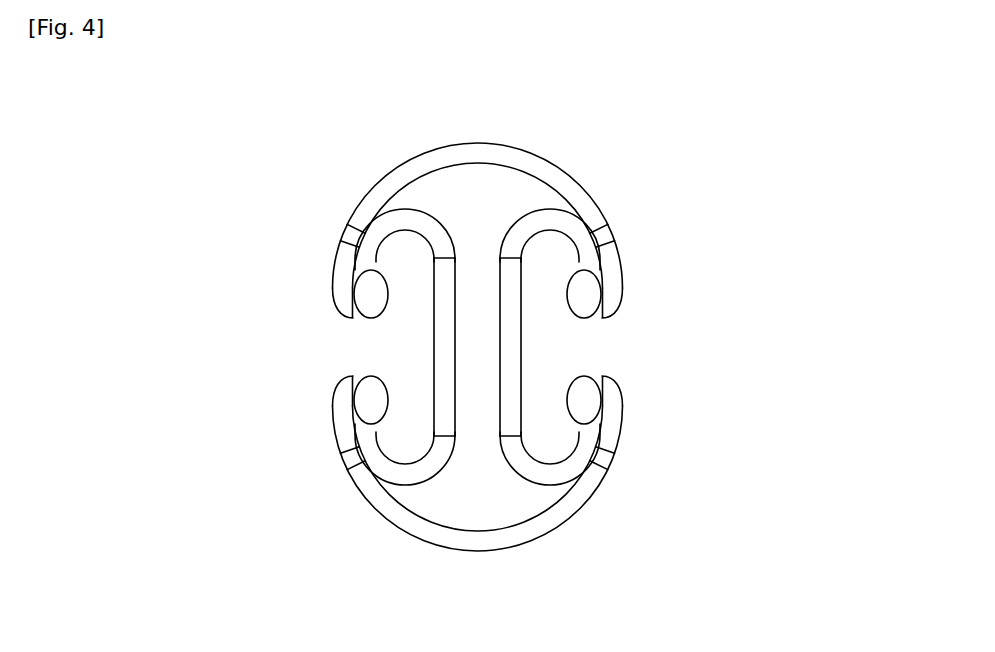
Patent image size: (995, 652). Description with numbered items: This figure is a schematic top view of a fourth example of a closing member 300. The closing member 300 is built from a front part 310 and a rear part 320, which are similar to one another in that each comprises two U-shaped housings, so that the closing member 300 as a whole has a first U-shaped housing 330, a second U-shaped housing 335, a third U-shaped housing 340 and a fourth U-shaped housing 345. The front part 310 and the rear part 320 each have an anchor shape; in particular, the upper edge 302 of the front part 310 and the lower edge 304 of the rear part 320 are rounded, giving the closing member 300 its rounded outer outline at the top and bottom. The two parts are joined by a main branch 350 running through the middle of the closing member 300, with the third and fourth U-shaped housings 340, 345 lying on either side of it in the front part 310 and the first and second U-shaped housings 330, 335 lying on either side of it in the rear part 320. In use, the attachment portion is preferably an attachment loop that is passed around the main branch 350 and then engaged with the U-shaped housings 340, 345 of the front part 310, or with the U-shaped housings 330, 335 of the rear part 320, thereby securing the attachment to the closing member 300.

The closing member 300 is at (762, 313).
The upper edge 302 is at (478, 143).
The lower edge 304 is at (477, 552).
The front part 310 is at (250, 144).
The rear part 320 is at (250, 374).
The first U-shaped housing 330 is at (406, 436).
The second U-shaped housing 335 is at (549, 436).
The third U-shaped housing 340 is at (406, 258).
The fourth U-shaped housing 345 is at (549, 258).
The main branch 350 is at (477, 277).